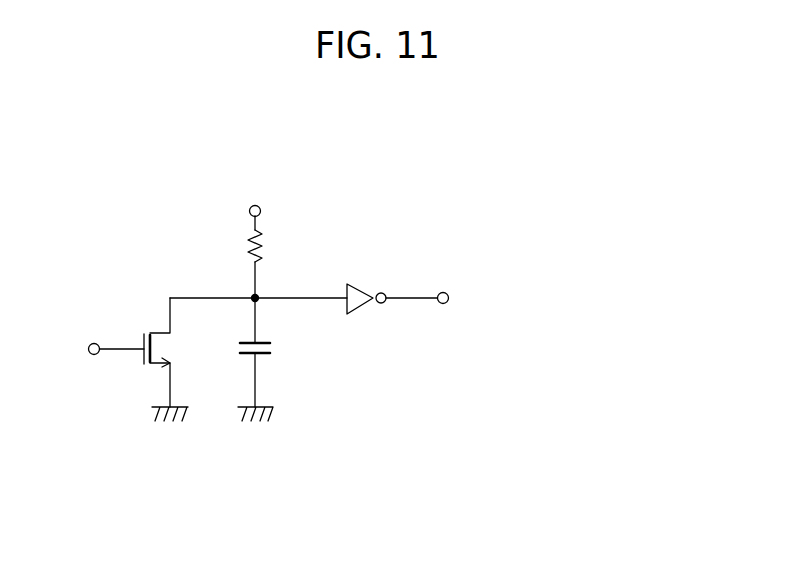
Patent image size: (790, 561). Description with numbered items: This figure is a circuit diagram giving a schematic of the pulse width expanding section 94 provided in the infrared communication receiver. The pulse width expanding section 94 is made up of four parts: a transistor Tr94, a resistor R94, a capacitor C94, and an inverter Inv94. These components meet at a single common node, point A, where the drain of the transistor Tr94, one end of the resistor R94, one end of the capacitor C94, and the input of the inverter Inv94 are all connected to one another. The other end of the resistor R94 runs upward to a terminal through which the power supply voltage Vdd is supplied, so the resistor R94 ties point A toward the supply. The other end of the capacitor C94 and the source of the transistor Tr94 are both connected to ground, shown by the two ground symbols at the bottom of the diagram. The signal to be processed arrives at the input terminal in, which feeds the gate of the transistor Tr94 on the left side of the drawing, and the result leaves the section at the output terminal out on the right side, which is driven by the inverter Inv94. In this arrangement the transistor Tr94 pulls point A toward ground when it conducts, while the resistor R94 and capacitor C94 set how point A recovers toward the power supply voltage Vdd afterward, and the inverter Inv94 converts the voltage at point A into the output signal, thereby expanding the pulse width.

The pulse width expanding section 94 is at (389, 175).
The transistor Tr94 is at (164, 333).
The resistor R94 is at (263, 250).
The capacitor C94 is at (275, 347).
The inverter Inv94 is at (357, 312).
The point A is at (253, 296).
The power supply voltage Vdd is at (256, 199).
The input terminal in is at (96, 335).
The output terminal out is at (444, 285).